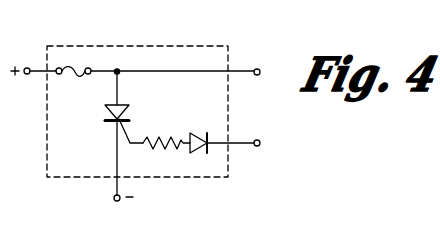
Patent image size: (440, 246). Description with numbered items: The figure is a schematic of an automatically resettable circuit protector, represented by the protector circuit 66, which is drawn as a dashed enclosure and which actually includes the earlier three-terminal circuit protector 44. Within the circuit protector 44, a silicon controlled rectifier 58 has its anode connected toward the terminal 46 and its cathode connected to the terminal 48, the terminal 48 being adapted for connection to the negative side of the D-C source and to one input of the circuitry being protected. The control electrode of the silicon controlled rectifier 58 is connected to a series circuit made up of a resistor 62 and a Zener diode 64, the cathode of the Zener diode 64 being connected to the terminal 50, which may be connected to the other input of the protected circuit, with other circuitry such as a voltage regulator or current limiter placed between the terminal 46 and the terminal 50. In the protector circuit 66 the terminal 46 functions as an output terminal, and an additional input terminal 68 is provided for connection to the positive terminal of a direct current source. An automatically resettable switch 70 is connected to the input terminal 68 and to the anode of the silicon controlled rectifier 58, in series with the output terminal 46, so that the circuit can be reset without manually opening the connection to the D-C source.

The circuit protector 44 is at (200, 122).
The terminal 46 is at (259, 69).
The terminal 48 is at (115, 201).
The terminal 50 is at (259, 140).
The silicon controlled rectifier 58 is at (129, 109).
The resistor 62 is at (150, 150).
The Zener diode 64 is at (194, 151).
The protector circuit 66 is at (171, 43).
The input terminal 68 is at (28, 68).
The automatically resettable switch 70 is at (78, 69).